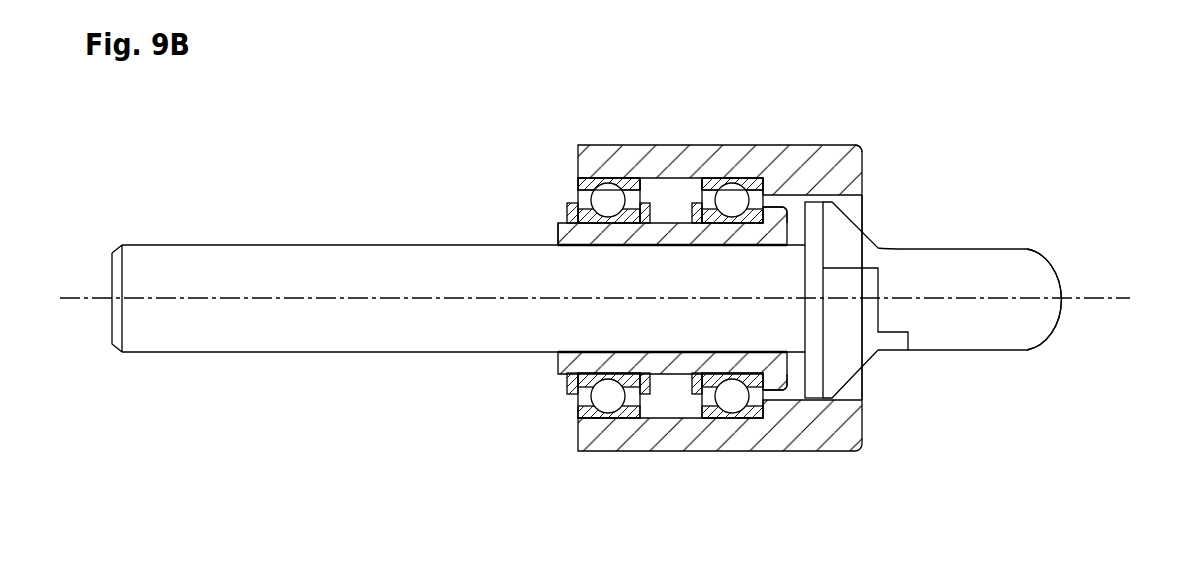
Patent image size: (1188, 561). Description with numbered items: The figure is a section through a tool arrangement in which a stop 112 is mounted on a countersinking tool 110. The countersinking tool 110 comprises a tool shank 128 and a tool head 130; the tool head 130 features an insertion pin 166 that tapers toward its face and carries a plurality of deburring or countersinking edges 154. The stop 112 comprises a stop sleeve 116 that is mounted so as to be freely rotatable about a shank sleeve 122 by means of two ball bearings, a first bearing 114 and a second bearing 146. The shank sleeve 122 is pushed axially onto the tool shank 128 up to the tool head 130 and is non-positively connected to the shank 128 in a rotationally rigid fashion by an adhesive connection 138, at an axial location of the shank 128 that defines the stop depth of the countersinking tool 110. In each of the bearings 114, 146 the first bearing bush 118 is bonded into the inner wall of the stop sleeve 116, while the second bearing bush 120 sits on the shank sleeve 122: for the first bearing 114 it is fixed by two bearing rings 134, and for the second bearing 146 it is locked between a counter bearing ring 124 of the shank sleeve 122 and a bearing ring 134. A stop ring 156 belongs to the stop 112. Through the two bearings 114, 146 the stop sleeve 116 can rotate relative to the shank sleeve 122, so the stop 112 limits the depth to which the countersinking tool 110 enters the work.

The countersinking tool 110 is at (976, 212).
The stop 112 is at (845, 112).
The bearing 114 is at (603, 166).
The stop sleeve 116 is at (781, 133).
The first bearing bush 118 is at (588, 176).
The second bearing bush 120 is at (628, 246).
The shank sleeve 122 is at (793, 403).
The counter bearing ring 124 is at (773, 381).
The tool shank 128 is at (262, 268).
The tool head 130 is at (881, 373).
The bearing ring 134 is at (568, 394).
The adhesive connection 138 is at (587, 248).
The second bearing 146 is at (722, 166).
The edge 154 is at (878, 221).
The stop ring 156 is at (865, 172).
The insertion pin 166 is at (1050, 327).